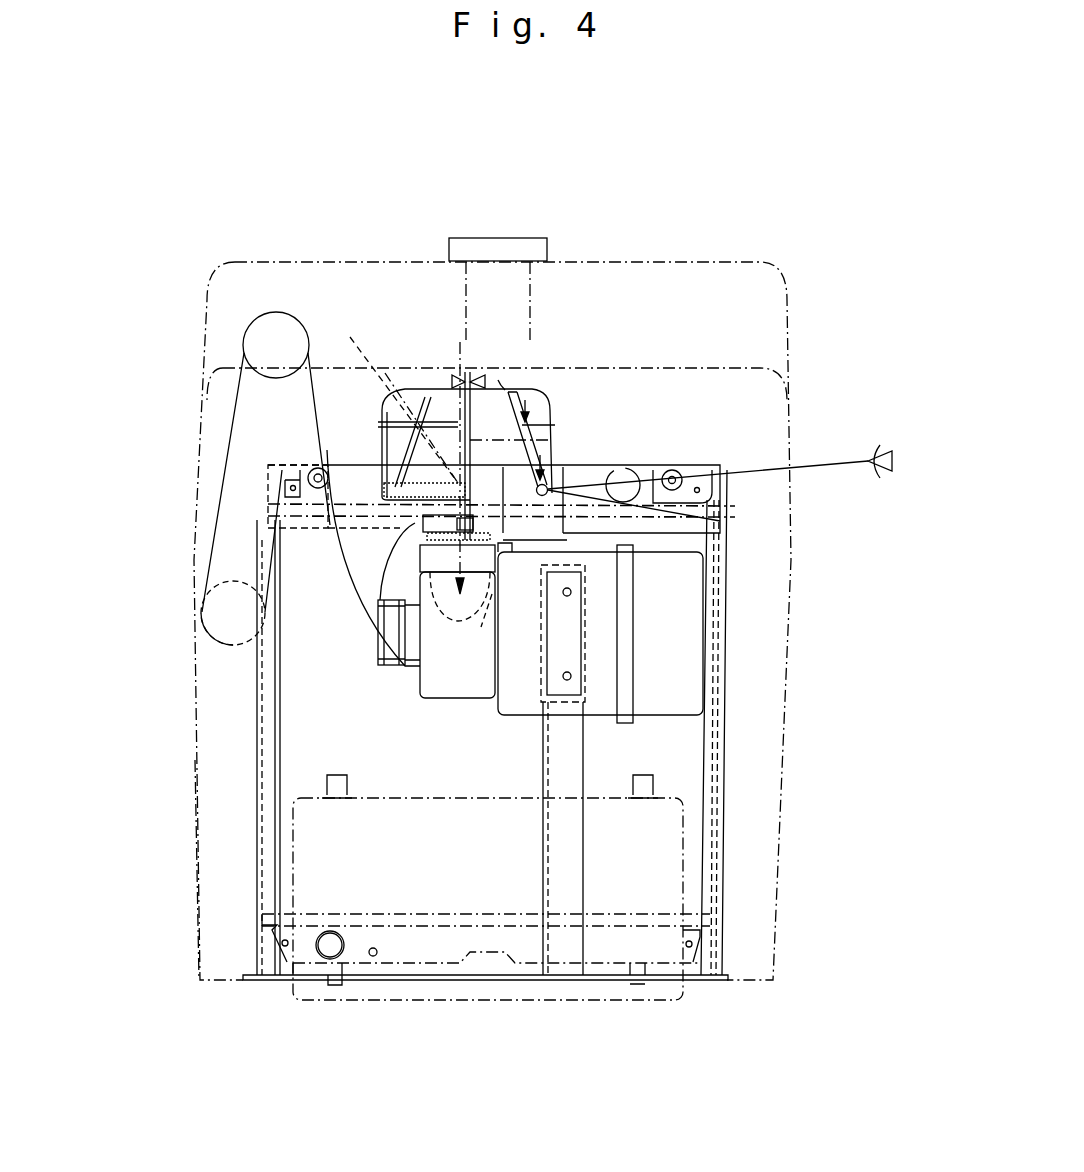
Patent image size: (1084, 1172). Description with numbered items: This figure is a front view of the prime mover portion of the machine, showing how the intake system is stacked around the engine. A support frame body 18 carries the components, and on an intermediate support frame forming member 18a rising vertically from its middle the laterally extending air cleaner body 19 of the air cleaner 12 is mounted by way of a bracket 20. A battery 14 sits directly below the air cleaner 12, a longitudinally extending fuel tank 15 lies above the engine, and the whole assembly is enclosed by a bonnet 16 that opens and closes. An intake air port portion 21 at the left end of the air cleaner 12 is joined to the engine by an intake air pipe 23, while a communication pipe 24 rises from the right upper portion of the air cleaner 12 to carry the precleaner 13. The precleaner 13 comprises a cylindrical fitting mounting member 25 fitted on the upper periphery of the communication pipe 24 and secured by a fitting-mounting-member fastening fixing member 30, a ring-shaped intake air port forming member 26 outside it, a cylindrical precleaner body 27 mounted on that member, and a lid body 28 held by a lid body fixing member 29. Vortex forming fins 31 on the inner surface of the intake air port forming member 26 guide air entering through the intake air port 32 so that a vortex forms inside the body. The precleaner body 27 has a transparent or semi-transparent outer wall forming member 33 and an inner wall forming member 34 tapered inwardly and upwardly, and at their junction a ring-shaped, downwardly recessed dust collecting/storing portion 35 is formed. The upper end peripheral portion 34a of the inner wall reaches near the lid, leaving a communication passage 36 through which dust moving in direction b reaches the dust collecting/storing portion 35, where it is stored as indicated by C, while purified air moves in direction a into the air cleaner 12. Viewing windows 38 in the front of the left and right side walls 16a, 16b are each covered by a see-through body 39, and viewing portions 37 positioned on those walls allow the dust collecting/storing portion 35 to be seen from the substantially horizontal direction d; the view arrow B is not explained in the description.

The air cleaner 12 is at (693, 547).
The precleaner 13 is at (540, 367).
The battery 14 is at (656, 882).
The fuel tank 15 is at (495, 237).
The bonnet 16 is at (645, 262).
The left side wall 16a is at (791, 613).
The right side wall 16b is at (195, 760).
The support frame body 18 is at (735, 755).
The intermediate support frame forming member 18a is at (557, 750).
The air cleaner body 19 is at (652, 700).
The bracket 20 is at (541, 637).
The intake air port portion 21 is at (375, 630).
The intake air pipe 23 is at (280, 322).
The communication pipe 24 is at (433, 550).
The fitting mounting member 25 is at (457, 520).
The intake air port forming member 26 is at (393, 500).
The precleaner body 27 is at (562, 442).
The lid body 28 is at (408, 387).
The lid body fixing member 29 is at (470, 372).
The fitting-mounting-member fastening fixing member 30 is at (413, 500).
The vortex forming fins 31 is at (372, 368).
The intake air port 32 is at (735, 514).
The outer wall forming member 33 is at (553, 490).
The inner wall forming member 34 is at (522, 392).
The upper end peripheral portion 34a is at (505, 390).
The dust collecting/storing portion 35 is at (716, 490).
The communication passage 36 is at (520, 388).
The viewing portions 37 is at (198, 458).
The viewing windows 38 is at (207, 405).
The see-through body 39 is at (205, 455).
The stored dust C is at (517, 419).
The moving direction of dust b is at (570, 415).
The viewing direction d is at (800, 462).
The moving direction of air a is at (413, 668).
The viewpoint B is at (880, 461).